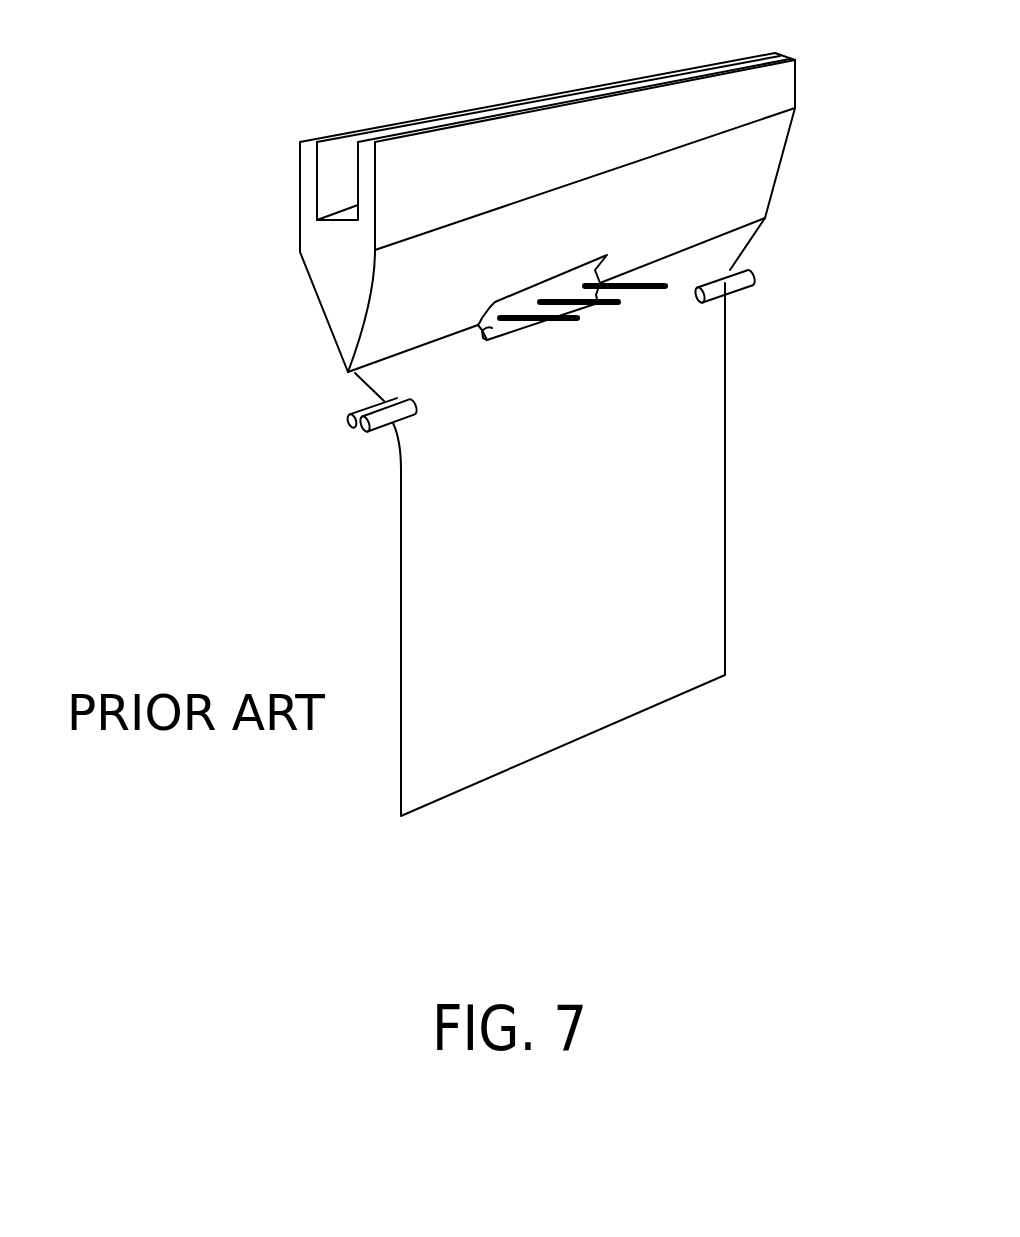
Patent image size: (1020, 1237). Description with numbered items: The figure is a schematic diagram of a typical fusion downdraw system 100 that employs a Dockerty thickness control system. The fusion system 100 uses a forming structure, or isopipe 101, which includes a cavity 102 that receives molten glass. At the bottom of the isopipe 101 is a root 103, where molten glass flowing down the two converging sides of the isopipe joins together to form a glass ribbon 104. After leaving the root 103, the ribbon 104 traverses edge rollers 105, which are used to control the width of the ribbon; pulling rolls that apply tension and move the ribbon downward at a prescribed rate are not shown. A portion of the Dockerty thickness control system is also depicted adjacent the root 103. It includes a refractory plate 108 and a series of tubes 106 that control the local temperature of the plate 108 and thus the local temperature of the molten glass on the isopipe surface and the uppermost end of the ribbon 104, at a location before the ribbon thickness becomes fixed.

The fusion system 100 is at (885, 64).
The forming structure (isopipe) 101 is at (743, 178).
The cavity 102 is at (328, 180).
The root 103 is at (387, 362).
The ribbon 104 is at (728, 386).
The edge rollers 105 is at (752, 274).
The tubes 106 is at (637, 283).
The refractory plate 108 is at (488, 327).